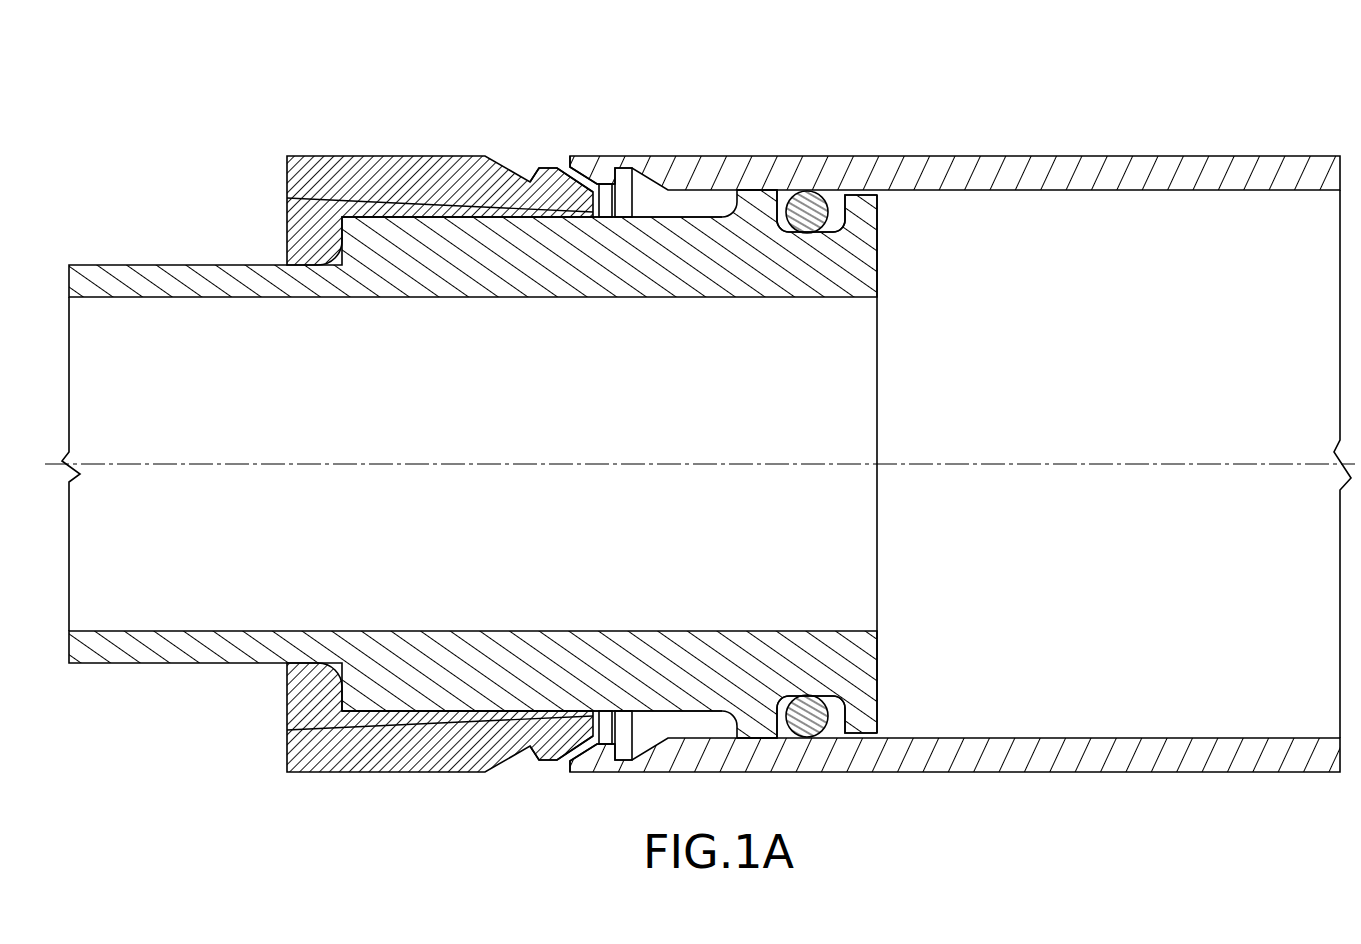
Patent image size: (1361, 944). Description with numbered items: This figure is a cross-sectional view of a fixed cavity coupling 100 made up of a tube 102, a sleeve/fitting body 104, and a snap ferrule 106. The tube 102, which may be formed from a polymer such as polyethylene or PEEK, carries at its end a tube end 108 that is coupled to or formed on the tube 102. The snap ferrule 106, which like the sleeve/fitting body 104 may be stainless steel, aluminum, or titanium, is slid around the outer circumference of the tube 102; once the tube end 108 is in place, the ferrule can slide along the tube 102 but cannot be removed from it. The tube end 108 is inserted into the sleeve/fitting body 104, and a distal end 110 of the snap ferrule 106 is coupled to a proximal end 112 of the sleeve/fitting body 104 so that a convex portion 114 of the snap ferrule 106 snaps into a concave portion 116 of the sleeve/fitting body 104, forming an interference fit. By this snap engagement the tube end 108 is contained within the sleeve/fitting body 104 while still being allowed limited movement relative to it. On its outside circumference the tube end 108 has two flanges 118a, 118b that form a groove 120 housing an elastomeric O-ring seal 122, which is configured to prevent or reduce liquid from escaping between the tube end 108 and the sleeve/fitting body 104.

The fixed cavity coupling 100 is at (188, 150).
The tube 102 is at (160, 266).
The sleeve/fitting body 104 is at (1034, 151).
The snap ferrule 106 is at (377, 151).
The tube end 108 is at (882, 301).
The distal end of the snap ferrule 110 is at (589, 224).
The proximal end of the sleeve/fitting body 112 is at (585, 151).
The convex portion 114 is at (551, 161).
The concave portion 116 is at (628, 161).
The flange 118a is at (756, 187).
The flange 118b is at (872, 187).
The groove 120 is at (836, 187).
The elastomeric O-ring seal 122 is at (840, 224).